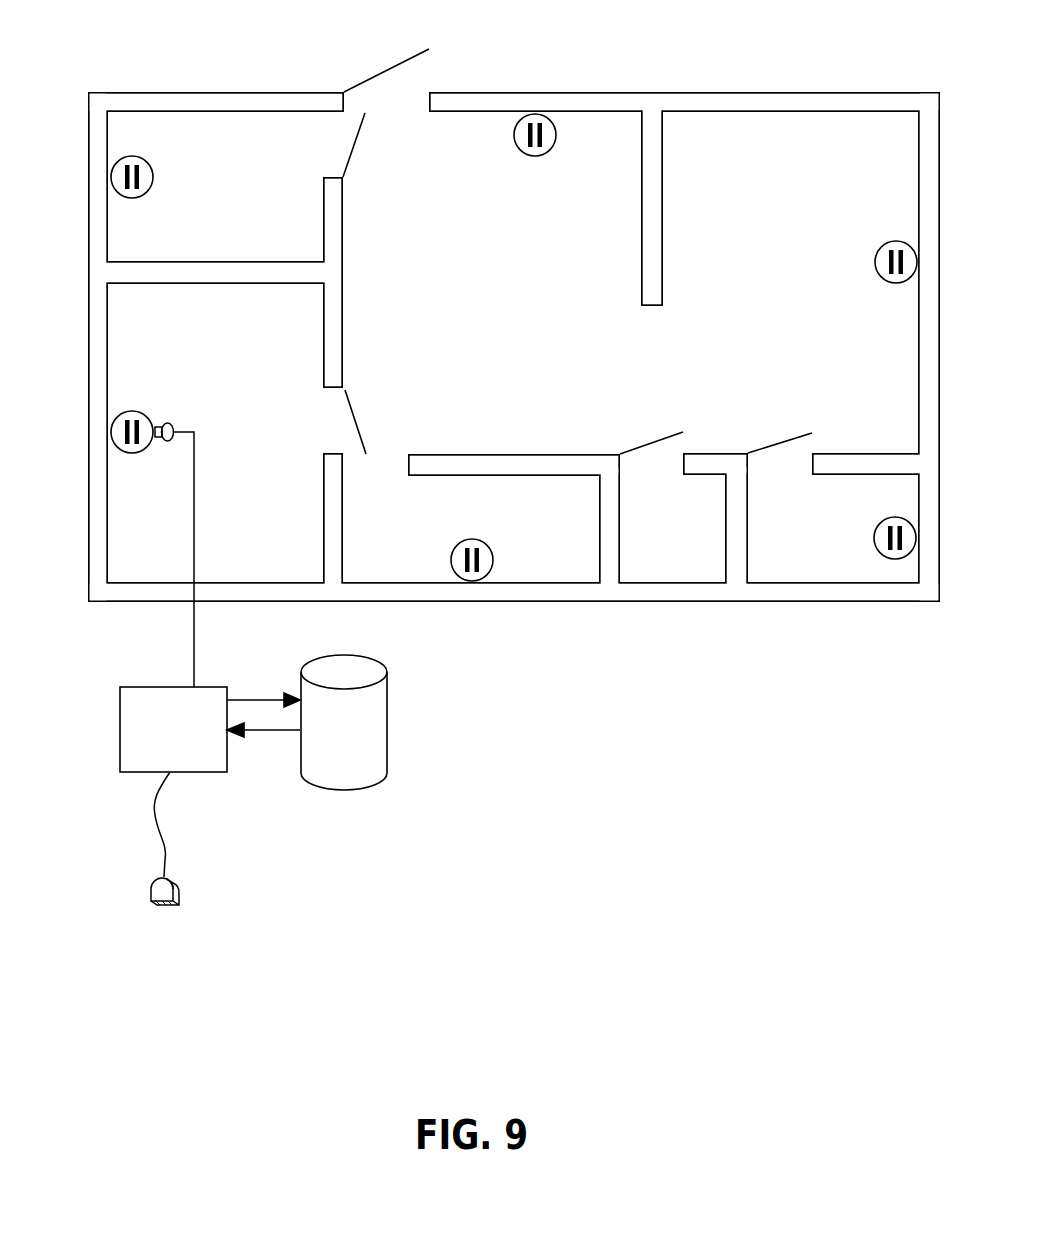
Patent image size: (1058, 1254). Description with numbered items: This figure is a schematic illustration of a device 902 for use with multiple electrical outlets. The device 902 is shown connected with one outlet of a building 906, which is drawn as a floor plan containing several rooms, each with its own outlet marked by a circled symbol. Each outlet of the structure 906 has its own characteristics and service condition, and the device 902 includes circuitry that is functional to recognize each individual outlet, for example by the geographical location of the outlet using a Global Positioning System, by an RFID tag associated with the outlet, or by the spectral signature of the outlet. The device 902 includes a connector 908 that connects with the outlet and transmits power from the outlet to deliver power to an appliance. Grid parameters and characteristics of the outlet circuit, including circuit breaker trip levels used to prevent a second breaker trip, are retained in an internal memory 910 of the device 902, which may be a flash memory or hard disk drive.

The device 902 is at (120, 708).
The building 906 is at (643, 92).
The connector 908 is at (175, 428).
The internal memory 910 is at (394, 688).